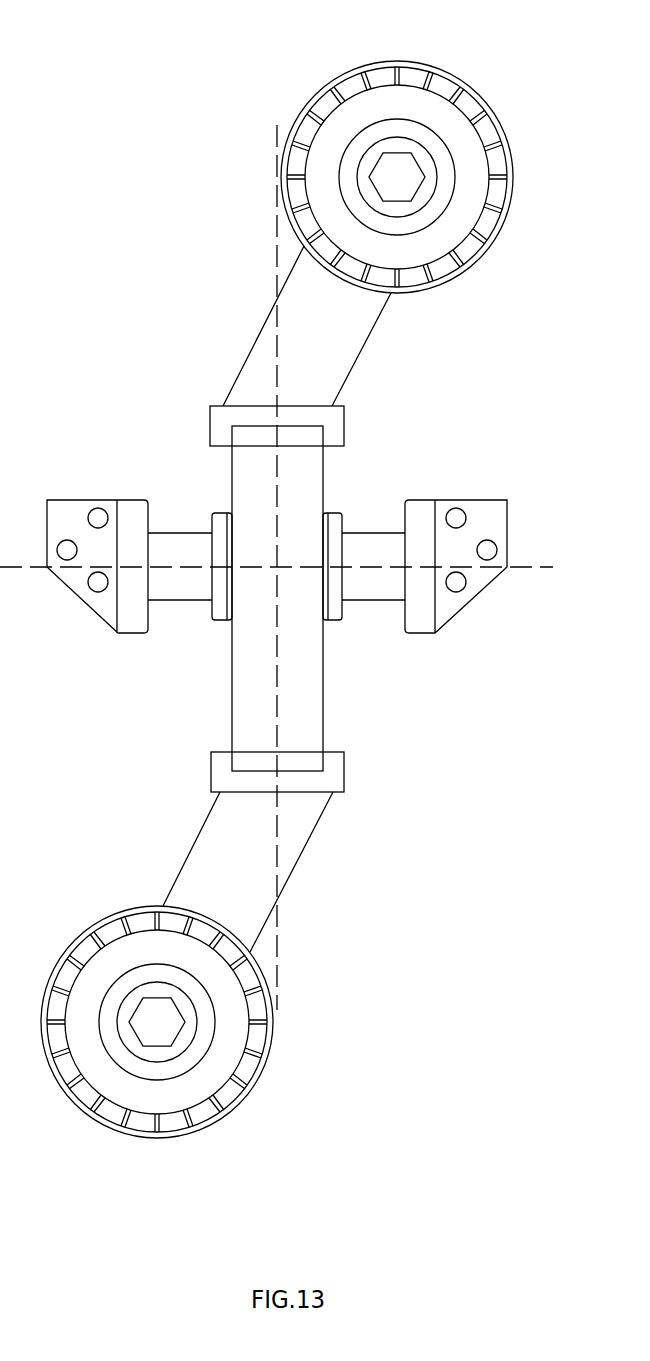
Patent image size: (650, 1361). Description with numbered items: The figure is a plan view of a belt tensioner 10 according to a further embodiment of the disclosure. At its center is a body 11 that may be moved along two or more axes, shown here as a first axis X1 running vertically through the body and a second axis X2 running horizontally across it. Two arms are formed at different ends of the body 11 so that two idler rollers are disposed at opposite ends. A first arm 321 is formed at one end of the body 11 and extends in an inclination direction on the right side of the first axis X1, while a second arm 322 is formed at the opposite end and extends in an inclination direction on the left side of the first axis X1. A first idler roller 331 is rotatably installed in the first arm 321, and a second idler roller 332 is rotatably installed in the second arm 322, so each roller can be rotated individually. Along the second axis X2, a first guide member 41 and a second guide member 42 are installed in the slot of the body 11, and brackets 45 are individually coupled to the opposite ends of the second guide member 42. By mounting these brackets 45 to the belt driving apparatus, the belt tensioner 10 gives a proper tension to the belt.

The belt tensioner 10 is at (94, 160).
The body 11 is at (335, 727).
The first arm 321 is at (265, 367).
The second arm 322 is at (288, 850).
The first idler roller 331 is at (396, 61).
The second idler roller 332 is at (157, 1139).
The first guide member 41 is at (330, 500).
The second guide member 42 is at (176, 585).
The brackets 45 is at (90, 600).
The first axis X1 is at (278, 932).
The second axis X2 is at (540, 568).